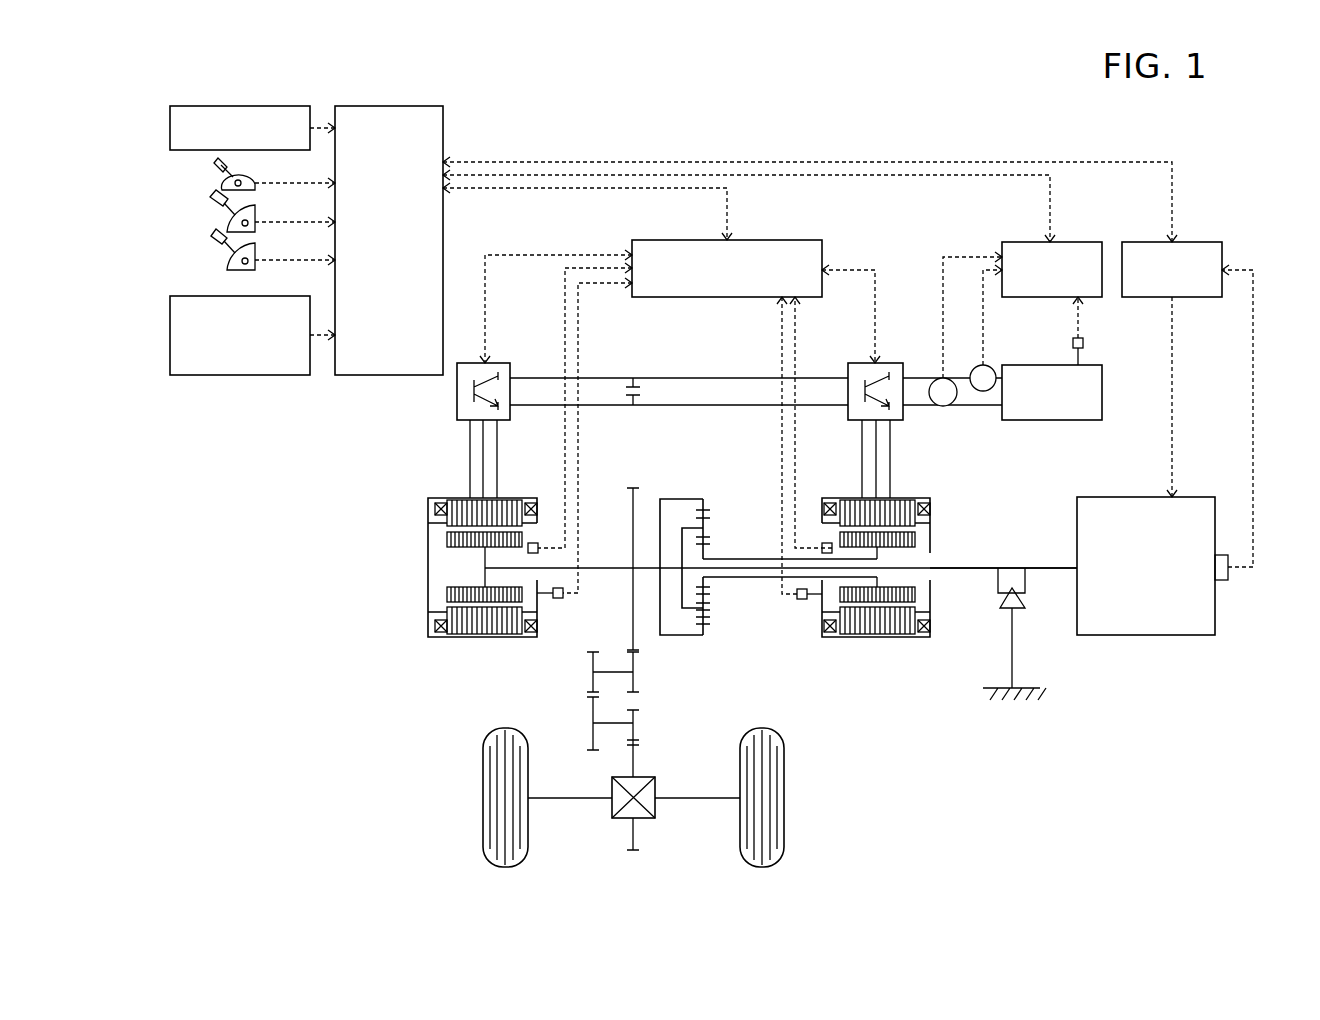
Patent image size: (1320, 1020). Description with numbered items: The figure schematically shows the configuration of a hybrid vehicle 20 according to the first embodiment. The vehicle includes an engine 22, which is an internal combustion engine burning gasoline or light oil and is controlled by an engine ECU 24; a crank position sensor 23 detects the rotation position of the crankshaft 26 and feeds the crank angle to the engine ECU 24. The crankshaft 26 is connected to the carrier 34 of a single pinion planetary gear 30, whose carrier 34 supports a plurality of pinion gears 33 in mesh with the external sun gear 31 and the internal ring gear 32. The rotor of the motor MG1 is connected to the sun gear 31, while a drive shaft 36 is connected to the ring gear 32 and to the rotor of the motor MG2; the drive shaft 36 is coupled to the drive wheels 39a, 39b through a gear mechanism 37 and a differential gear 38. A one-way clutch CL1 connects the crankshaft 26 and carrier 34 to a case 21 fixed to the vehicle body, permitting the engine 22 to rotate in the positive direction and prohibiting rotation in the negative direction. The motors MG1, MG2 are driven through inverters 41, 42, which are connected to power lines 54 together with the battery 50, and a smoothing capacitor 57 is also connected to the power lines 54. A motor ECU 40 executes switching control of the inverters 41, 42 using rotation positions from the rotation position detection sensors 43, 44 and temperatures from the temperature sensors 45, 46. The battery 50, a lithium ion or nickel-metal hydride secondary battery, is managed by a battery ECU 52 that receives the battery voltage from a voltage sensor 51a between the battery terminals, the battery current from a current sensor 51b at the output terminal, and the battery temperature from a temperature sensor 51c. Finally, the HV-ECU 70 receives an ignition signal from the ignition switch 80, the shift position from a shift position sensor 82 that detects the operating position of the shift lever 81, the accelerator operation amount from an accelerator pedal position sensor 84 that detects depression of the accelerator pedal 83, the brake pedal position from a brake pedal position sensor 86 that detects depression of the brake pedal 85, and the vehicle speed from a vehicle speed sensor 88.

The hybrid vehicle 20 is at (881, 106).
The case 21 is at (1030, 688).
The engine 22 is at (1146, 496).
The crank position sensor 23 is at (1220, 583).
The engine electronic control unit 24 is at (1192, 241).
The crankshaft 26 is at (1037, 567).
The planetary gear 30 is at (768, 540).
The sun gear 31 is at (704, 587).
The ring gear 32 is at (704, 627).
The pinion gears 33 is at (704, 606).
The carrier 34 is at (690, 548).
The drive shaft 36 is at (600, 567).
The gear mechanism 37 is at (656, 685).
The differential gear 38 is at (612, 790).
The drive wheel 39a is at (483, 796).
The drive wheel 39b is at (784, 796).
The motor electronic control unit 40 is at (775, 240).
The inverter 41 is at (880, 362).
The inverter 42 is at (491, 362).
The rotation position detection sensor 43 is at (824, 542).
The rotation position detection sensor 44 is at (535, 542).
The temperature sensor 45 is at (802, 600).
The temperature sensor 46 is at (558, 600).
The battery 50 is at (1043, 365).
The voltage sensor 51a is at (943, 406).
The current sensor 51b is at (984, 391).
The temperature sensor 51c is at (1084, 343).
The battery electronic control unit 52 is at (1068, 241).
The power lines 54 is at (702, 405).
The smoothing capacitor 57 is at (637, 383).
The hybrid electronic control unit 70 is at (390, 106).
The ignition switch 80 is at (170, 128).
The shift lever 81 is at (214, 163).
The shift position sensor 82 is at (222, 187).
The accelerator pedal 83 is at (215, 200).
The accelerator pedal position sensor 84 is at (228, 227).
The brake pedal 85 is at (216, 241).
The brake pedal position sensor 86 is at (228, 263).
The vehicle speed sensor 88 is at (170, 333).
The one-way clutch CL1 is at (1019, 603).
The motor MG1 is at (866, 638).
The motor MG2 is at (485, 638).